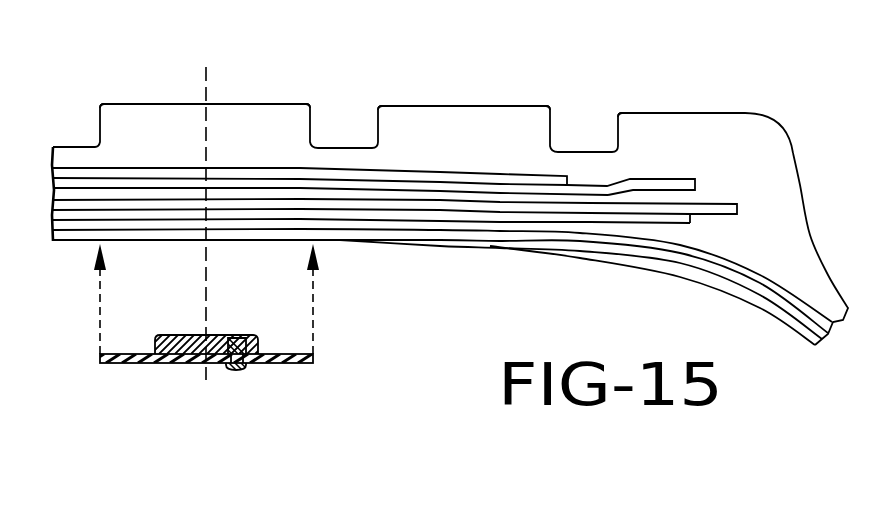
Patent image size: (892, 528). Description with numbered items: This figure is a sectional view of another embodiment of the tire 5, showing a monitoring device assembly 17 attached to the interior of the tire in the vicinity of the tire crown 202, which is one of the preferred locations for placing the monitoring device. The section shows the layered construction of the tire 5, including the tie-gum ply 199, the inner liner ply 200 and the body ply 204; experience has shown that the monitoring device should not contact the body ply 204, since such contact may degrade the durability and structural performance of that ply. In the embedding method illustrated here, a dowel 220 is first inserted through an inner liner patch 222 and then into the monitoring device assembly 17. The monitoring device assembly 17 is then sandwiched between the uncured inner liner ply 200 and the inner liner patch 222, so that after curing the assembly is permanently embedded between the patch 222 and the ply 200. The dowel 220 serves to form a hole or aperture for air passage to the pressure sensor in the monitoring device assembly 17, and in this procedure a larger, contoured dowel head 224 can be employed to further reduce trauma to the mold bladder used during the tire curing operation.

The tire 5 is at (687, 115).
The tire crown 202 is at (249, 105).
The inner liner ply 200 is at (425, 241).
The tie-gum ply 199 is at (540, 242).
The body ply 204 is at (650, 245).
The monitoring device assembly 17 is at (180, 335).
The inner liner patch 222 is at (128, 362).
The dowel 220 is at (230, 368).
The dowel head 224 is at (225, 367).